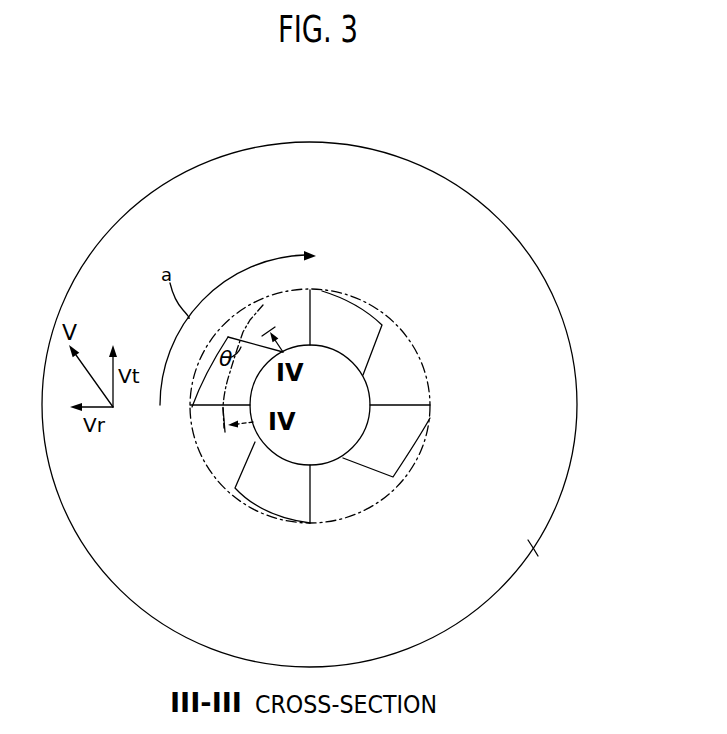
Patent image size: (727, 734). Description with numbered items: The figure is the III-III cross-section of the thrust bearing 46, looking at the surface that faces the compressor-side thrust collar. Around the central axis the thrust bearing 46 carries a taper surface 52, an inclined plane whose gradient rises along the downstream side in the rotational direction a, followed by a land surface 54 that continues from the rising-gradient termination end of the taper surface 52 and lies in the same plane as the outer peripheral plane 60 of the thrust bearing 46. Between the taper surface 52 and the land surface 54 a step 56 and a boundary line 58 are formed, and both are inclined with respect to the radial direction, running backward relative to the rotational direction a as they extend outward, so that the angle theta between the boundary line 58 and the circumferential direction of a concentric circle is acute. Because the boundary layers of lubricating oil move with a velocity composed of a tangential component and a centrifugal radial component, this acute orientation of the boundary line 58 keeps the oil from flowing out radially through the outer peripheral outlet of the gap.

The thrust bearing 46 is at (214, 149).
The taper surface 52 is at (208, 383).
The land surface 54 is at (262, 322).
The step 56 is at (212, 403).
The boundary line 58 is at (236, 355).
The outer peripheral plane 60 is at (522, 538).